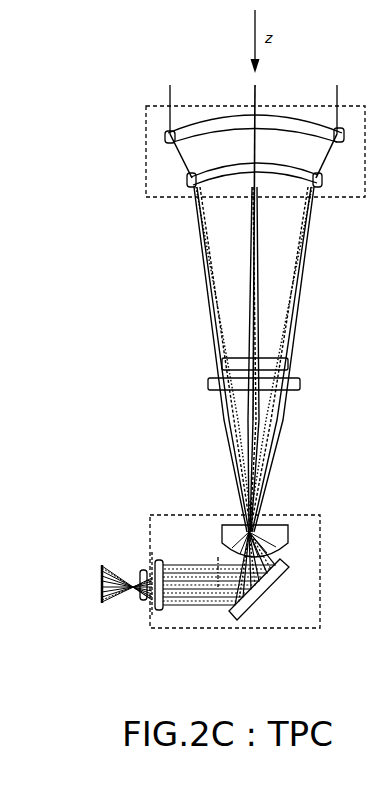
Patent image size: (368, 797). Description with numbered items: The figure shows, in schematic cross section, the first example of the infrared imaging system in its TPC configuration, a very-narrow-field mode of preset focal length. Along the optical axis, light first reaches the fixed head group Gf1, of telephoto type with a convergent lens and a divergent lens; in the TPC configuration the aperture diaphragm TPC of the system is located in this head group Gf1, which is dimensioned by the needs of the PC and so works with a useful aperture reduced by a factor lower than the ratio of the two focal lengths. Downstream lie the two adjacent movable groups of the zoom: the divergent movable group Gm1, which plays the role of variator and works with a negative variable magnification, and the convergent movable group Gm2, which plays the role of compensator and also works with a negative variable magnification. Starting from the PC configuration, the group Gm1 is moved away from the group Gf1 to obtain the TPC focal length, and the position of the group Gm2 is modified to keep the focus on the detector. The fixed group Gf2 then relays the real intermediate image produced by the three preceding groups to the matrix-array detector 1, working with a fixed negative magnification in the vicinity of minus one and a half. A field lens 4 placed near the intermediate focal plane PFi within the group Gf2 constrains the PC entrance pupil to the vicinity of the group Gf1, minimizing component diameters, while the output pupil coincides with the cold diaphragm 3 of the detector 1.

The matrix-array detector 1 is at (100, 594).
The cold diaphragm 3 is at (130, 594).
The field lens 4 is at (222, 542).
The fixed group Gf1 is at (233, 151).
The divergent movable group Gm1 is at (225, 362).
The convergent movable group Gm2 is at (231, 386).
The fixed group Gf2 is at (253, 571).
The intermediate focal plane PFi is at (254, 608).
The TPC configuration TPC is at (191, 188).